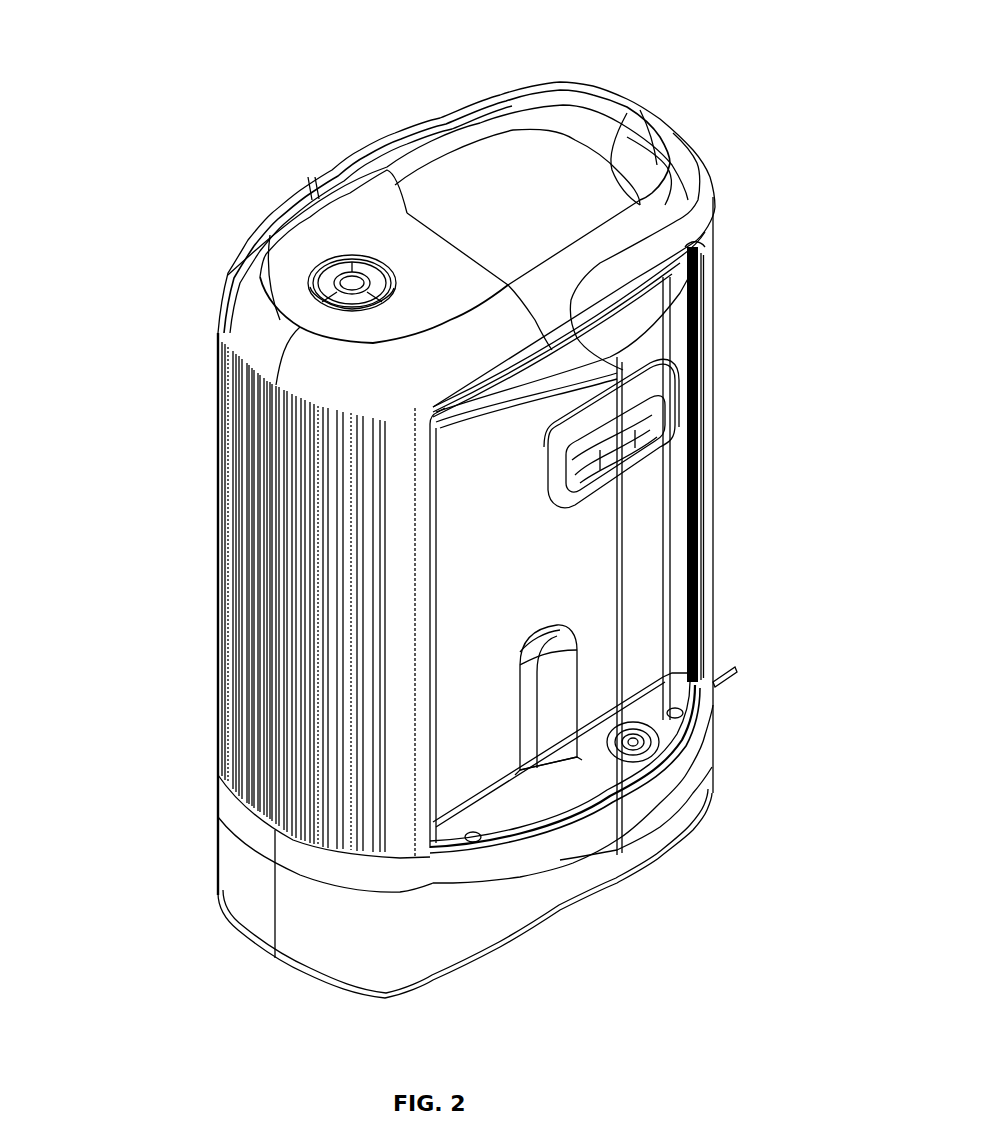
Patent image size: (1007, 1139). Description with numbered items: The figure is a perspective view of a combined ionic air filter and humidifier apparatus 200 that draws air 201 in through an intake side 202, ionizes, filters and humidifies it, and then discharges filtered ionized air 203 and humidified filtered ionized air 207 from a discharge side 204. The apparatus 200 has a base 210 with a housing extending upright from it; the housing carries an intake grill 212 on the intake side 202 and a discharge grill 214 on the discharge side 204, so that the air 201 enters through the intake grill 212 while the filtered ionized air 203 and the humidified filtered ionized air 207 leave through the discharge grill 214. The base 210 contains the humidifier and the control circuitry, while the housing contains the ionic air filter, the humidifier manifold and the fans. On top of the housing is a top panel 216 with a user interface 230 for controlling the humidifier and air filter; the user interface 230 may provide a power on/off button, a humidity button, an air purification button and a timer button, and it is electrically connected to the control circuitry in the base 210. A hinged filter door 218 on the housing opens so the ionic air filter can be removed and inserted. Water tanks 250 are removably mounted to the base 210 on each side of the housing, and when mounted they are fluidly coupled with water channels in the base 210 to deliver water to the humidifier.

The combined ionic air filter and humidifier apparatus 200 is at (466, 437).
The air 201 is at (738, 351).
The intake side 202 is at (720, 440).
The filtered ionized air 203 is at (203, 648).
The discharge side 204 is at (188, 528).
The humidified filtered ionized air 207 is at (190, 465).
The base 210 is at (380, 977).
The intake grill 212 is at (707, 290).
The discharge grill 214 is at (240, 723).
The top panel 216 is at (313, 243).
The hinged filter door 218 is at (528, 92).
The user interface 230 is at (403, 246).
The water tanks 250 is at (535, 812).